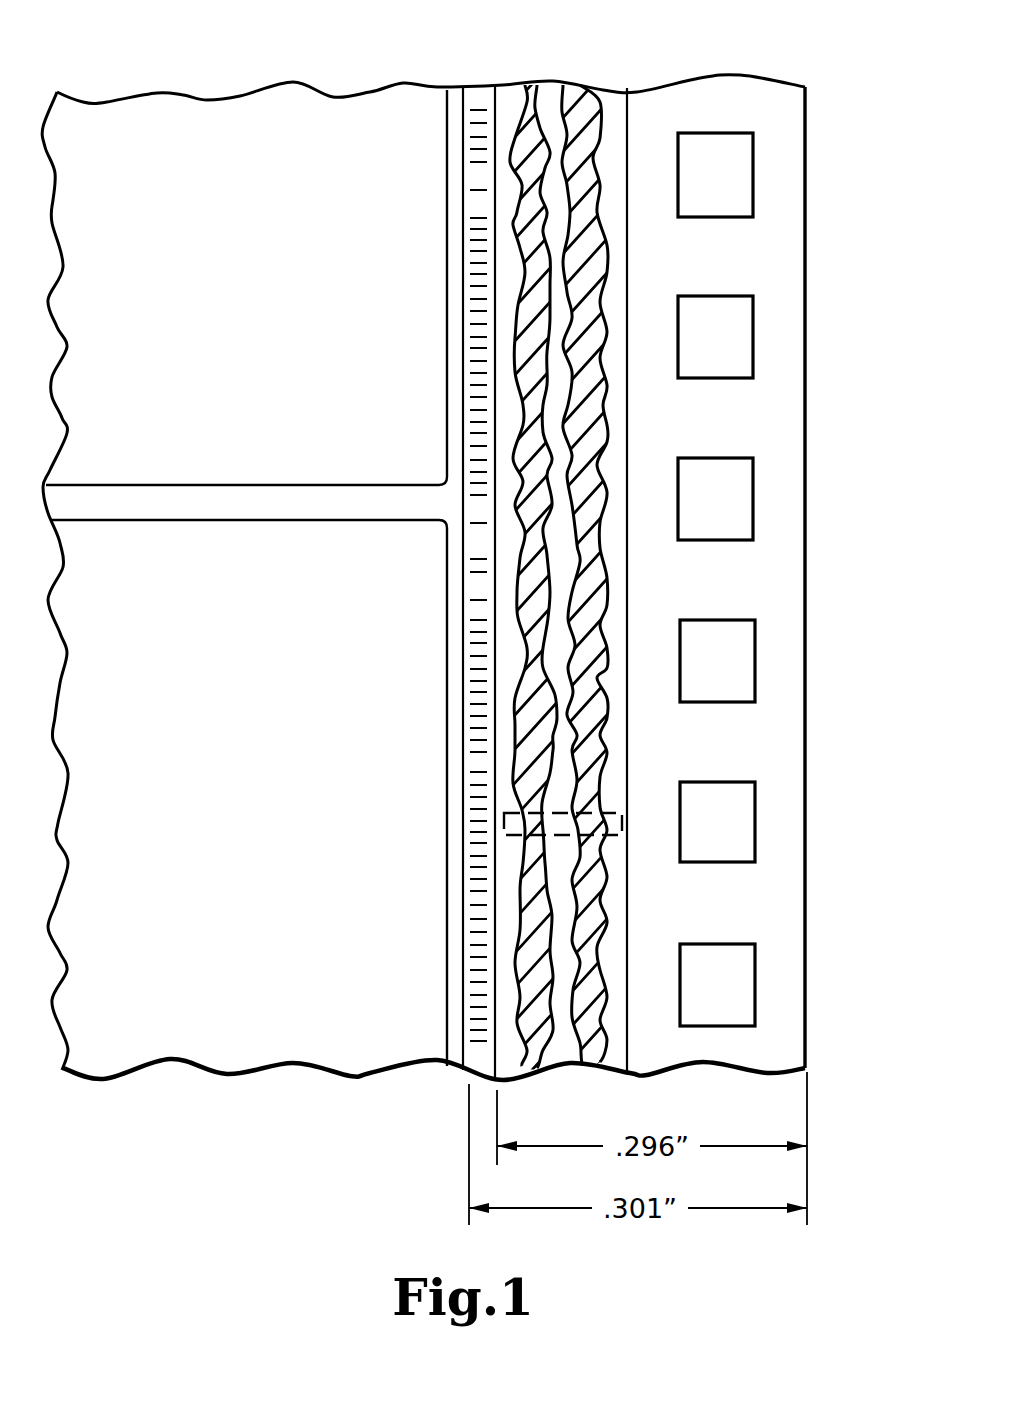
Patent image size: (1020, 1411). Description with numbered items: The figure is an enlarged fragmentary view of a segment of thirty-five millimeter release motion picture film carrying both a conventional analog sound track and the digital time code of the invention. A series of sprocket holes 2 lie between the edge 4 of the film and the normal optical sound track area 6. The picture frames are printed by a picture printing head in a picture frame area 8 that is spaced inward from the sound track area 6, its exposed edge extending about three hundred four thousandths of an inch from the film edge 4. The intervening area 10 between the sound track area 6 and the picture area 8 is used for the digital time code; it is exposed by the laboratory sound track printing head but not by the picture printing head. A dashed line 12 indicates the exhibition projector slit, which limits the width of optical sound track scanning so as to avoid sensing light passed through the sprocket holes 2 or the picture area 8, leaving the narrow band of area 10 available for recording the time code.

The sprocket holes 2 is at (753, 188).
The edge of the film 4 is at (822, 149).
The optical sound track area 6 is at (623, 72).
The picture frame area 8 is at (60, 72).
The intervening area 10 is at (462, 72).
The slit 12 is at (609, 812).